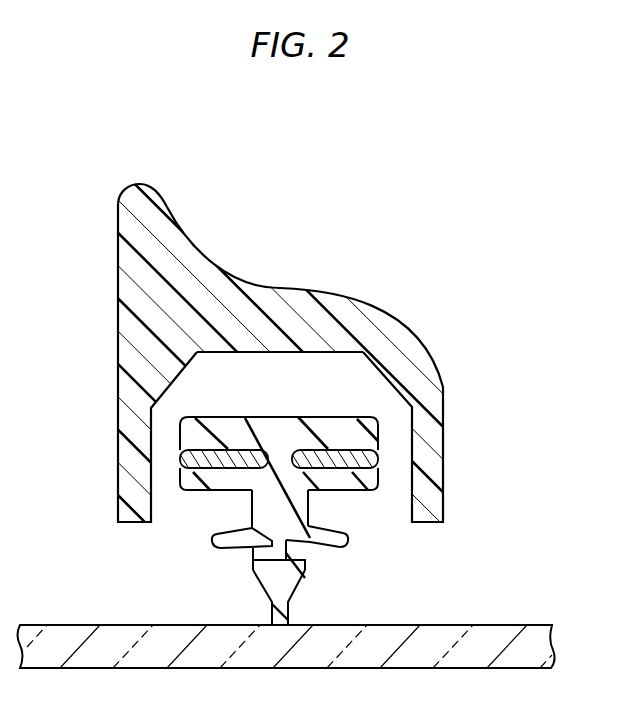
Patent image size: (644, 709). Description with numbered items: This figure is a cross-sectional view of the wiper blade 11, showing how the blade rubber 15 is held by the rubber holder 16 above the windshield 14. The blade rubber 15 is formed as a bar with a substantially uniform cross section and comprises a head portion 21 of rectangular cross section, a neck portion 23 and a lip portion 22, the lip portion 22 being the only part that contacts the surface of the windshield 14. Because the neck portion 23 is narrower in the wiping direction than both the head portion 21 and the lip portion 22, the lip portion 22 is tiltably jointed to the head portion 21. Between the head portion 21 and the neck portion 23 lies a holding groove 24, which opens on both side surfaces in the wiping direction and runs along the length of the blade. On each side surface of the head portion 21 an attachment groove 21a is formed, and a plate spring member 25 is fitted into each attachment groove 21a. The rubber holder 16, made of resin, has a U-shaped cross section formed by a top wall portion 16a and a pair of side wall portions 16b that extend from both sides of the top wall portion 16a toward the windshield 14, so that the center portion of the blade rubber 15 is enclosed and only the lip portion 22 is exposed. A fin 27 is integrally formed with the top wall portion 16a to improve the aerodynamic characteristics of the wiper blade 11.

The wiper blade 11 is at (480, 250).
The windshield 14 is at (498, 625).
The blade rubber 15 is at (358, 546).
The rubber holder 16 is at (391, 296).
The top wall portion 16a is at (288, 312).
The side wall portion 16b is at (132, 382).
The head portion 21 is at (315, 415).
The attachment groove 21a is at (236, 442).
The lip portion 22 is at (303, 605).
The neck portion 23 is at (260, 553).
The holding groove 24 is at (335, 505).
The plate spring member 25 is at (215, 462).
The fin 27 is at (140, 185).